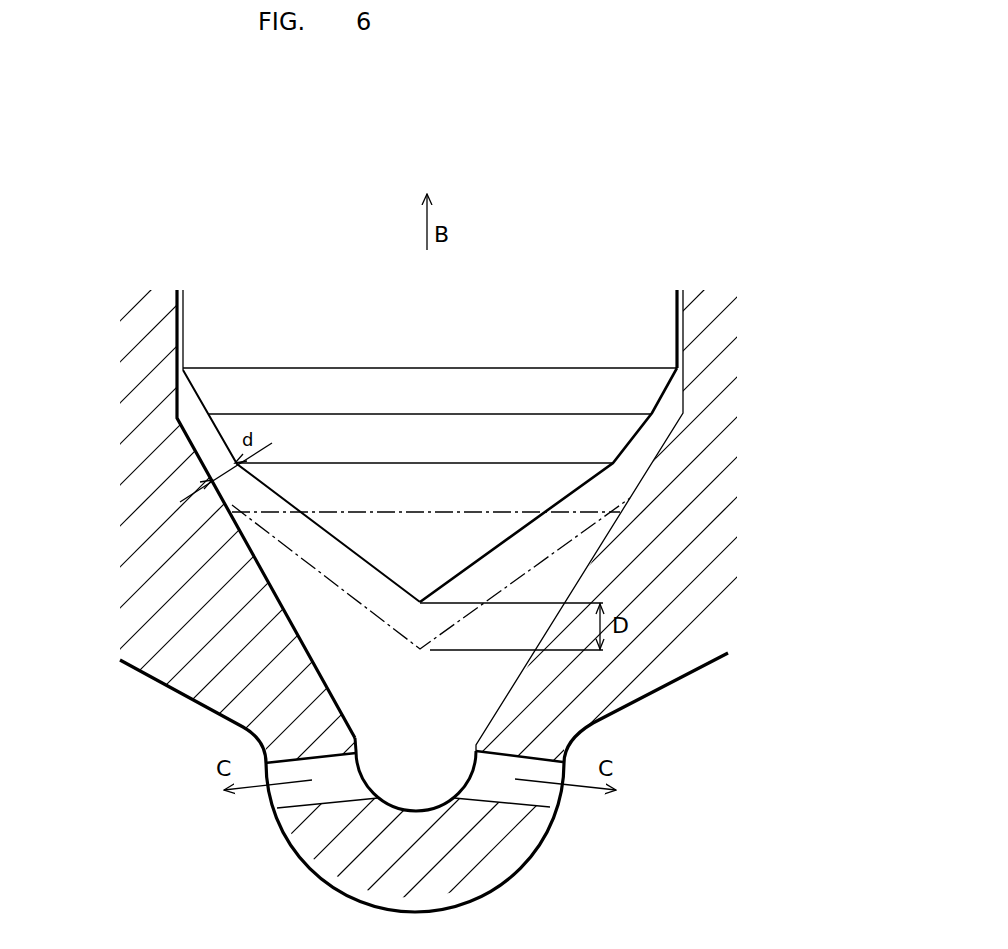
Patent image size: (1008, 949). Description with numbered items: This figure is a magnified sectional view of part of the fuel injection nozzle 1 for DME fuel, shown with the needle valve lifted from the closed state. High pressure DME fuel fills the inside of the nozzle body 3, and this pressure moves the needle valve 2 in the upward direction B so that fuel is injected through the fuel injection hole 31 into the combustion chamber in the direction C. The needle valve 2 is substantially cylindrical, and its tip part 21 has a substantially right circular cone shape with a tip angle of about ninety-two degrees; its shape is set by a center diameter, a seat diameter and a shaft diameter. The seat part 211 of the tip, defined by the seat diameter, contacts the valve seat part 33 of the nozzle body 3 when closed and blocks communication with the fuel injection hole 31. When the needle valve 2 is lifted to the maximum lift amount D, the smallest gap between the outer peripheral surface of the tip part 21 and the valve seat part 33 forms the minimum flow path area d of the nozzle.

The fuel injection nozzle 1 is at (770, 284).
The needle valve 2 is at (645, 333).
The tip part 21 is at (618, 433).
The seat part 211 is at (243, 413).
The nozzle body 3 is at (685, 648).
The fuel injection hole 31 is at (275, 800).
The valve seat part 33 is at (212, 480).